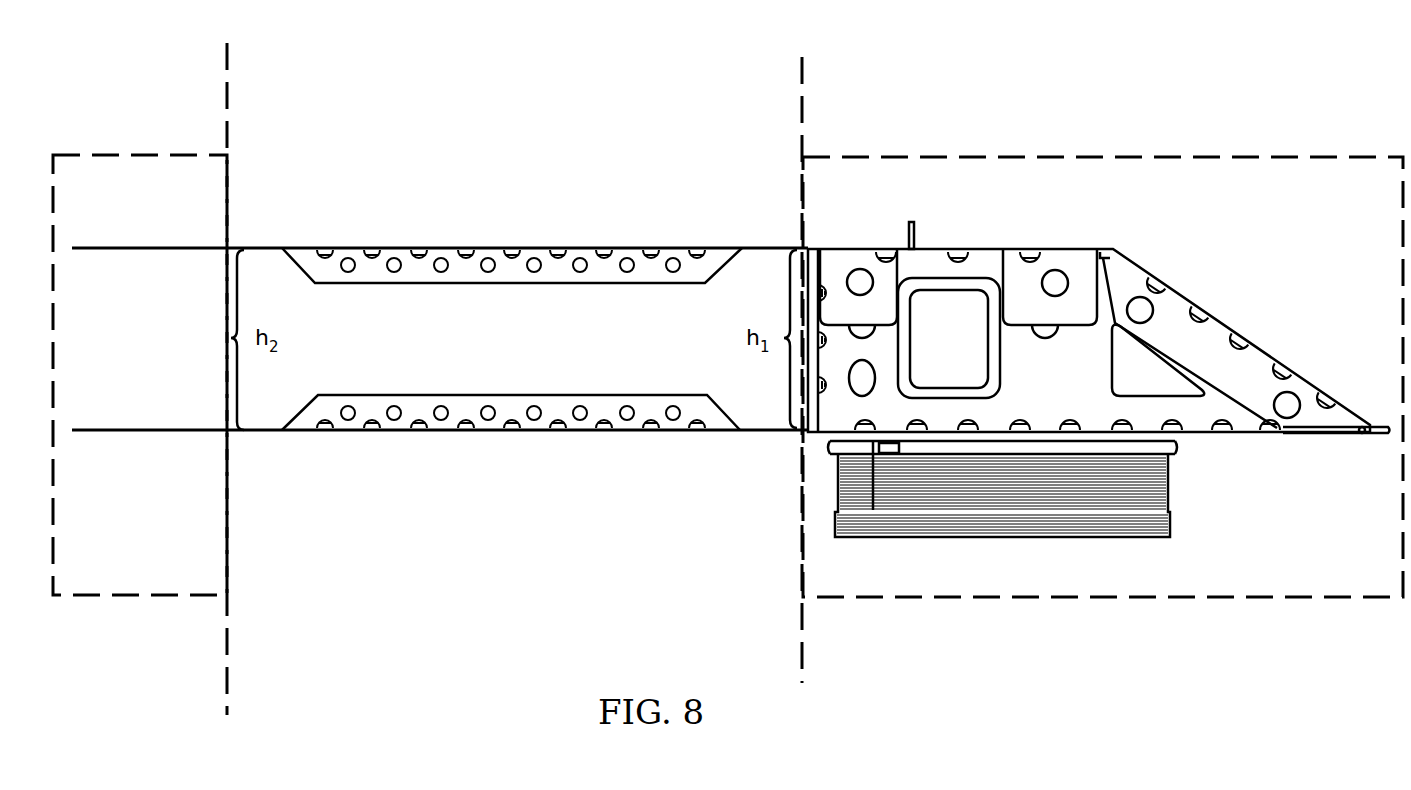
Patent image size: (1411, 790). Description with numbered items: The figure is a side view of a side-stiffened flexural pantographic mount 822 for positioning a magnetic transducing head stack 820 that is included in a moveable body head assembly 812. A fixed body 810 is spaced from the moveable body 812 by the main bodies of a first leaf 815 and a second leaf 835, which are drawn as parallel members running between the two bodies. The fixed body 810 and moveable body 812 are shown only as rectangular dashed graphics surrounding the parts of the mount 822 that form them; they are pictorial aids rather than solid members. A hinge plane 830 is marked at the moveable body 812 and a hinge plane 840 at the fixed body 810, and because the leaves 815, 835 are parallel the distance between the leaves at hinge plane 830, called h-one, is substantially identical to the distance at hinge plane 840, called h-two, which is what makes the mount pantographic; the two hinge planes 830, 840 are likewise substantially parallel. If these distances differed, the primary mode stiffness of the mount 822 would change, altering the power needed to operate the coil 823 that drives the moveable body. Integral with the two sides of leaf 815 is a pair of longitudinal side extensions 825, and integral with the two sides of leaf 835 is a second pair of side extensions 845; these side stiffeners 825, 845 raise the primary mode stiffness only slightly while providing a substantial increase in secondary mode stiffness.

The fixed body 810 is at (147, 153).
The moveable body head assembly 812 is at (1118, 158).
The first leaf 815 is at (260, 247).
The magnetic transducing head stack 820 is at (1383, 426).
The side-stiffened flexural pantographic mount 822 is at (642, 180).
The coil 823 is at (1170, 490).
The longitudinal side extensions 825 is at (646, 286).
The hinge plane of the moveable body 830 is at (804, 92).
The second leaf 835 is at (258, 428).
The hinge plane of the fixed body 840 is at (230, 49).
The longitudinal side extensions 845 is at (640, 394).